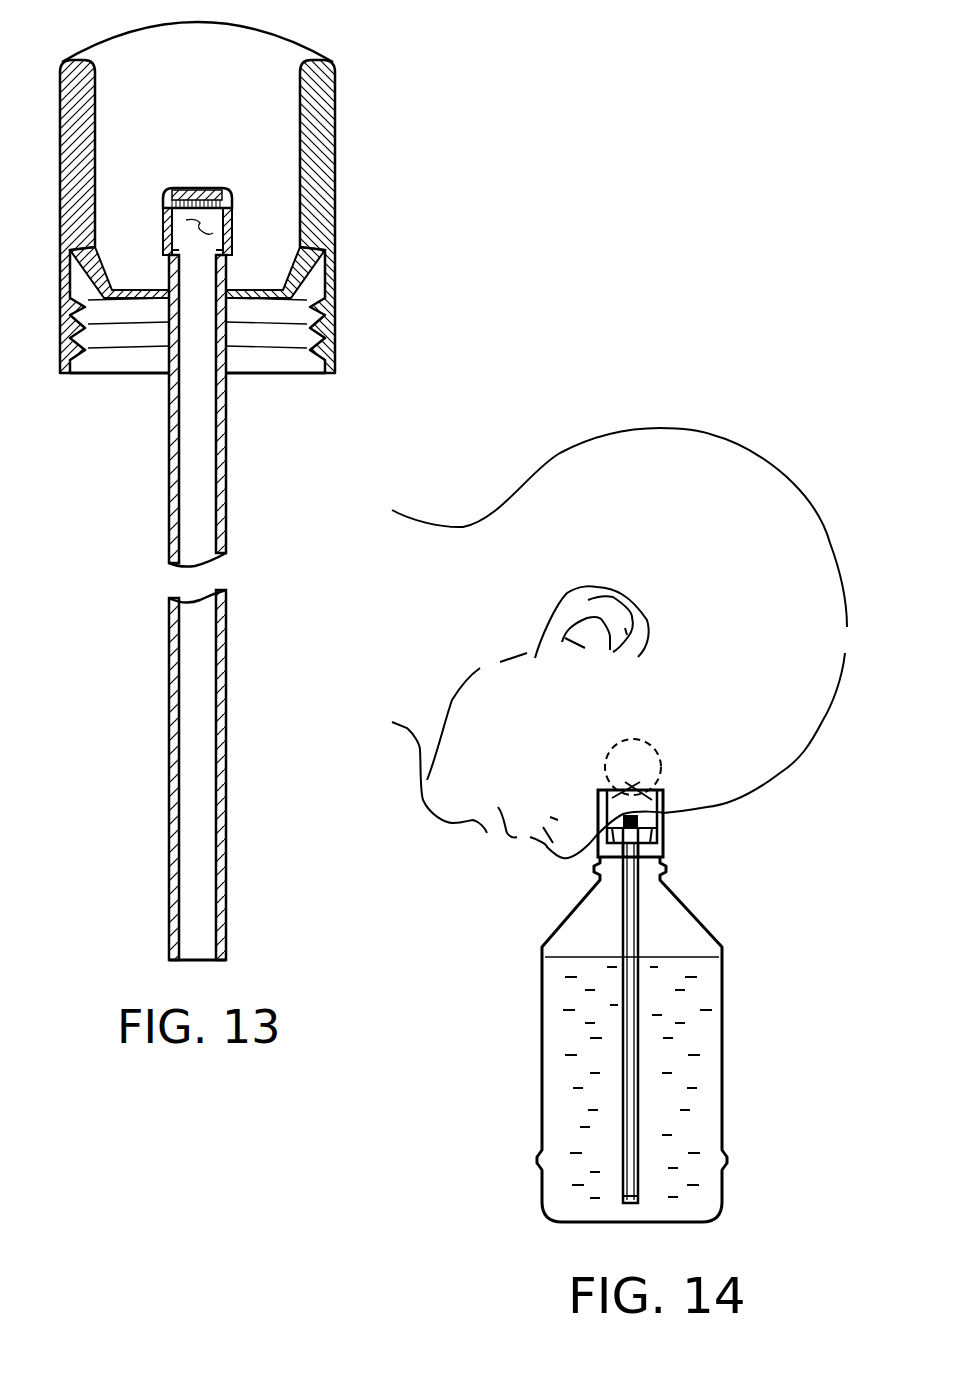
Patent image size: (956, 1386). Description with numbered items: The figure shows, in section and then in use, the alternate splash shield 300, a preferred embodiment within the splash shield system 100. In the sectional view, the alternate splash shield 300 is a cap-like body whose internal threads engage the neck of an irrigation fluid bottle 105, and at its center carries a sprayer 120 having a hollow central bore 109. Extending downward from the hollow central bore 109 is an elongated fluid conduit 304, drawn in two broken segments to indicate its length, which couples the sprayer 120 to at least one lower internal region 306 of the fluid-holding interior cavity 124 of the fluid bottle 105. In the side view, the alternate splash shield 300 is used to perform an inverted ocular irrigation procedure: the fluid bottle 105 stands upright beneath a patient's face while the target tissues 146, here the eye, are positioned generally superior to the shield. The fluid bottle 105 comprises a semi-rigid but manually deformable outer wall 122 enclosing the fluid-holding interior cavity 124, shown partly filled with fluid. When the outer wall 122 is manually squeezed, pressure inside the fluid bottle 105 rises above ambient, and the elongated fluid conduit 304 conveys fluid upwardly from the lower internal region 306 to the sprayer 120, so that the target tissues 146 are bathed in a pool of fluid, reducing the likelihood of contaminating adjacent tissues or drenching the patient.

In FIG. 13, the splash shield system 100 is at (365, 75).
In FIG. 13, the alternate splash shield 300 is at (348, 165).
In FIG. 14, the alternate splash shield 300 is at (680, 832).
In FIG. 13, the sprayer 120 is at (193, 188).
In FIG. 13, the hollow central bore 109 is at (233, 223).
In FIG. 13, the elongated fluid conduit 304 is at (170, 482).
In FIG. 14, the elongated fluid conduit 304 is at (638, 912).
In FIG. 14, the target tissues 146 is at (668, 730).
In FIG. 14, the fluid bottle 105 is at (652, 1039).
In FIG. 14, the outer wall 122 is at (540, 1062).
In FIG. 14, the fluid-holding interior cavity 124 is at (692, 1088).
In FIG. 14, the lower internal region 306 is at (657, 1208).